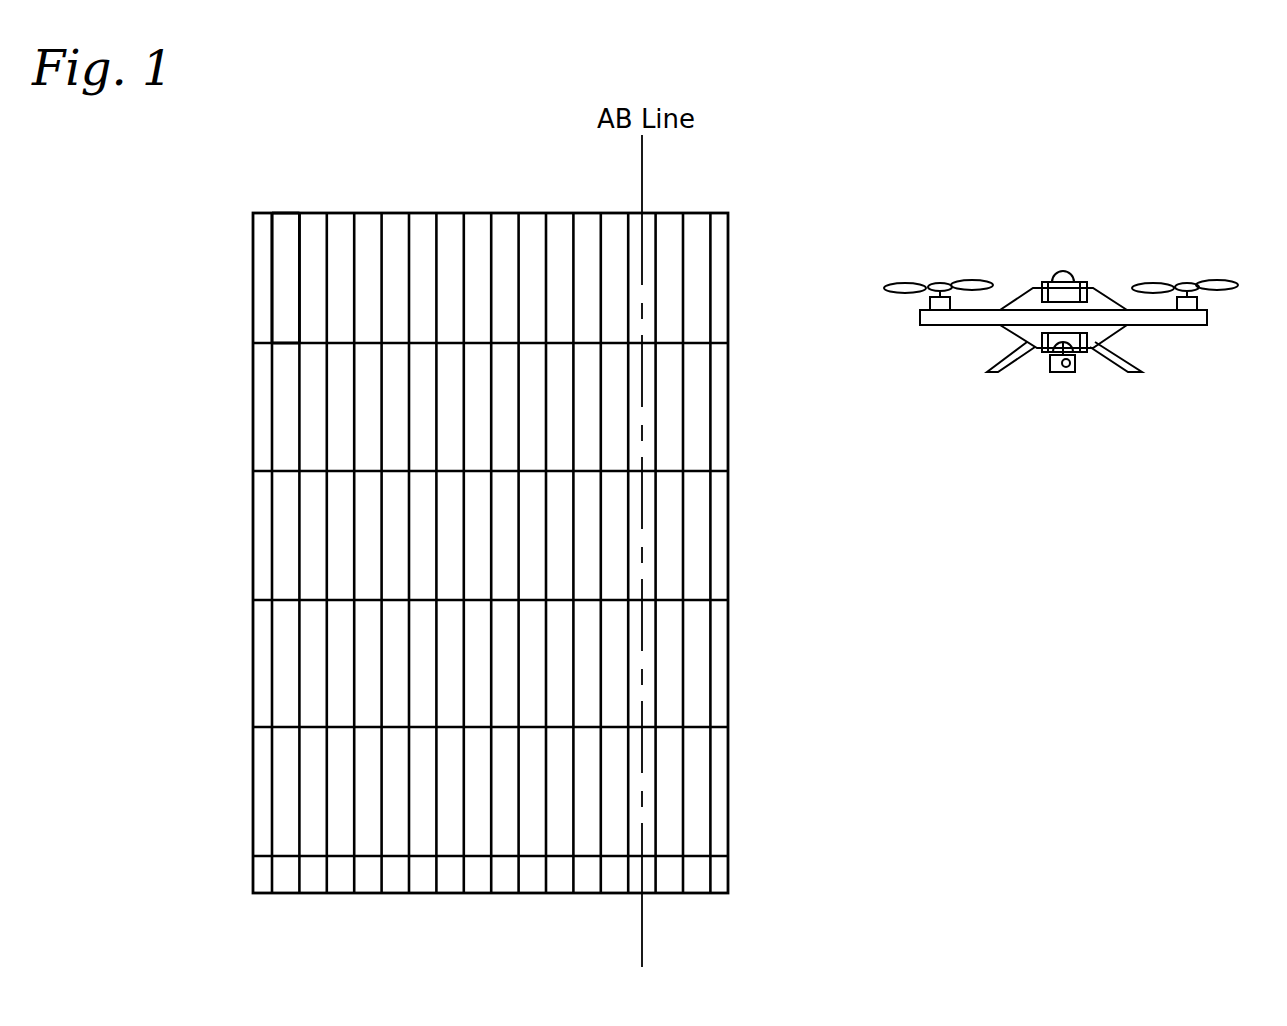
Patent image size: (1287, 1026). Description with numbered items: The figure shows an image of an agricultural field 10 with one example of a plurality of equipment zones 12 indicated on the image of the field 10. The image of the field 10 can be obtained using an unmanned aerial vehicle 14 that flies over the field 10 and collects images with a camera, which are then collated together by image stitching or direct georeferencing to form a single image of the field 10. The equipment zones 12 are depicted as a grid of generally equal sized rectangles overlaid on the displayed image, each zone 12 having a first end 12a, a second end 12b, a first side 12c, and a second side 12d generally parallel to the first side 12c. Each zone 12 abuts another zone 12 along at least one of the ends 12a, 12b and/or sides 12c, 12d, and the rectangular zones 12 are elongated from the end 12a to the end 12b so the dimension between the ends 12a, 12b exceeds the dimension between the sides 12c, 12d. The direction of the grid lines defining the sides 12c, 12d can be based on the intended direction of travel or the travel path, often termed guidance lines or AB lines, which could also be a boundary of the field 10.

The agricultural field 10 is at (695, 179).
The equipment zone 12 is at (285, 312).
The first end 12a is at (291, 215).
The second end 12b is at (290, 343).
The first side 12c is at (297, 260).
The second side 12d is at (274, 274).
The unmanned aerial vehicle 14 is at (1097, 285).